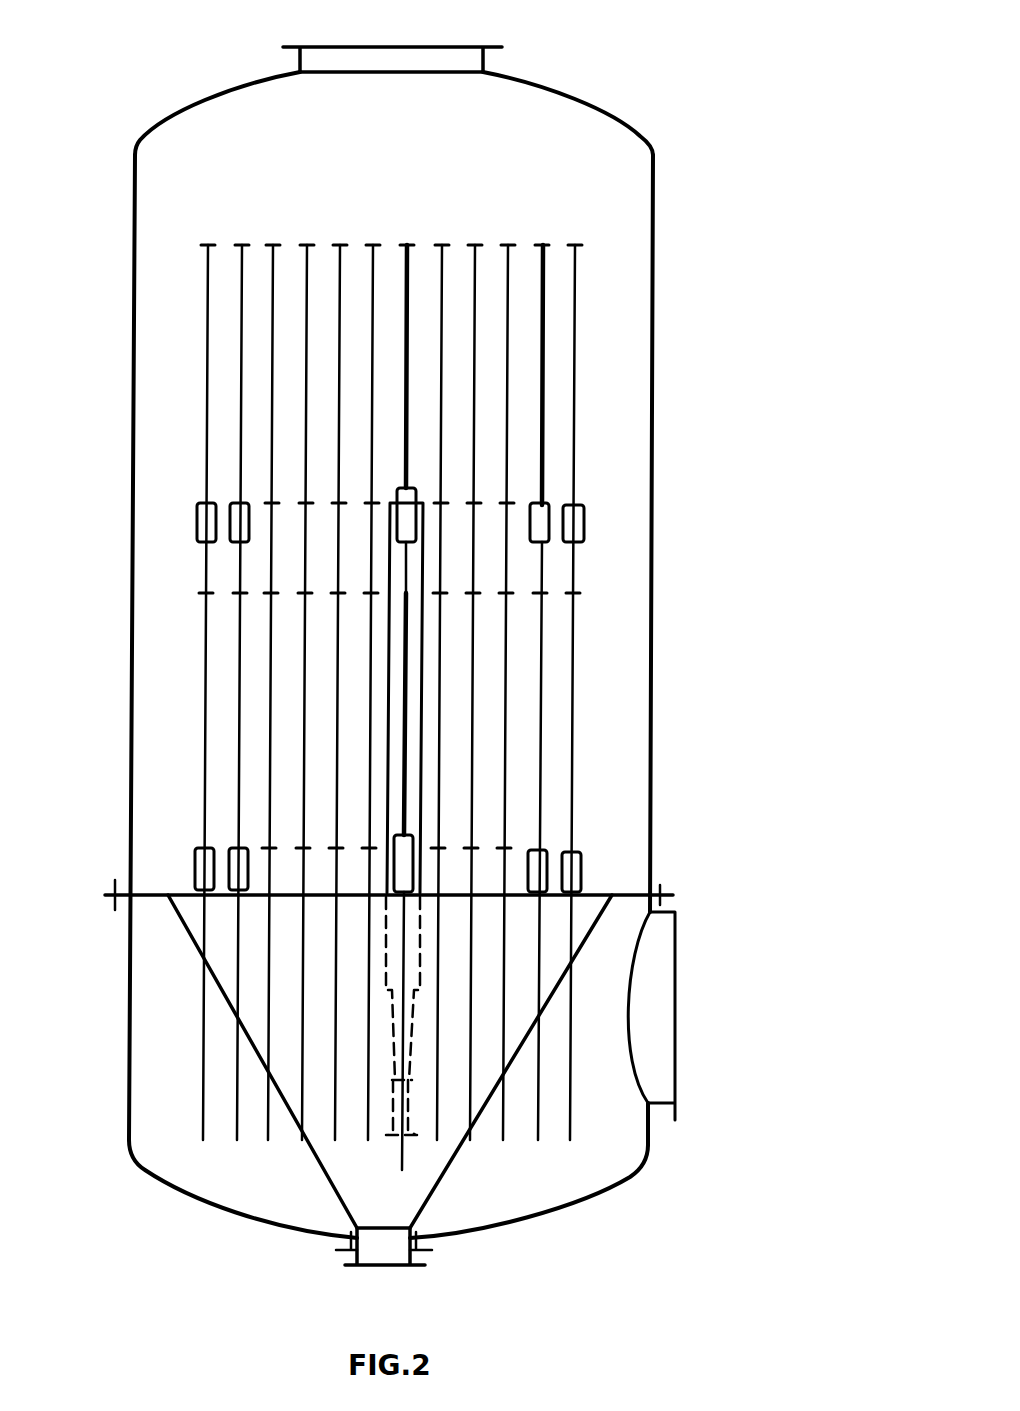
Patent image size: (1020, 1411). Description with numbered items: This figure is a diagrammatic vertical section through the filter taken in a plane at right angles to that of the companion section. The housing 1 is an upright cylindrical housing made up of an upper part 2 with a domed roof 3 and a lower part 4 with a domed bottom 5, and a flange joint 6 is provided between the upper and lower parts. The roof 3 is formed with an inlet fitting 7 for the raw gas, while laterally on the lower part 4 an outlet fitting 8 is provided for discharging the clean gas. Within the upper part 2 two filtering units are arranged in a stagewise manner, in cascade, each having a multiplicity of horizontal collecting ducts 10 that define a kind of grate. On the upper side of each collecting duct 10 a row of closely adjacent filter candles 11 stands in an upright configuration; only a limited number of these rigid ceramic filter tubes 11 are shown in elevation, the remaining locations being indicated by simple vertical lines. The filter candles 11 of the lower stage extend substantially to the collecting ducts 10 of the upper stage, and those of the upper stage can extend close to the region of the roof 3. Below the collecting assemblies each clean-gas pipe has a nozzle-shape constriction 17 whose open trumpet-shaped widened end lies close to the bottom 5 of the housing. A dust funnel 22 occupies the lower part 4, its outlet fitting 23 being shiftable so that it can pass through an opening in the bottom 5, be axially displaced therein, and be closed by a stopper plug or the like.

The housing 1 is at (663, 213).
The upper part 2 is at (653, 590).
The domed roof 3 is at (615, 110).
The lower part 4 is at (650, 1143).
The domed bottom 5 is at (207, 1208).
The flange joint 6 is at (683, 900).
The inlet fitting 7 is at (487, 60).
The outlet fitting 8 is at (675, 948).
The horizontal collecting ducts 10 is at (585, 520).
The filter candles 11 is at (407, 299).
The nozzle-shape constriction 17 is at (407, 1045).
The dust funnel 22 is at (452, 1163).
The outlet fitting 23 is at (355, 1268).